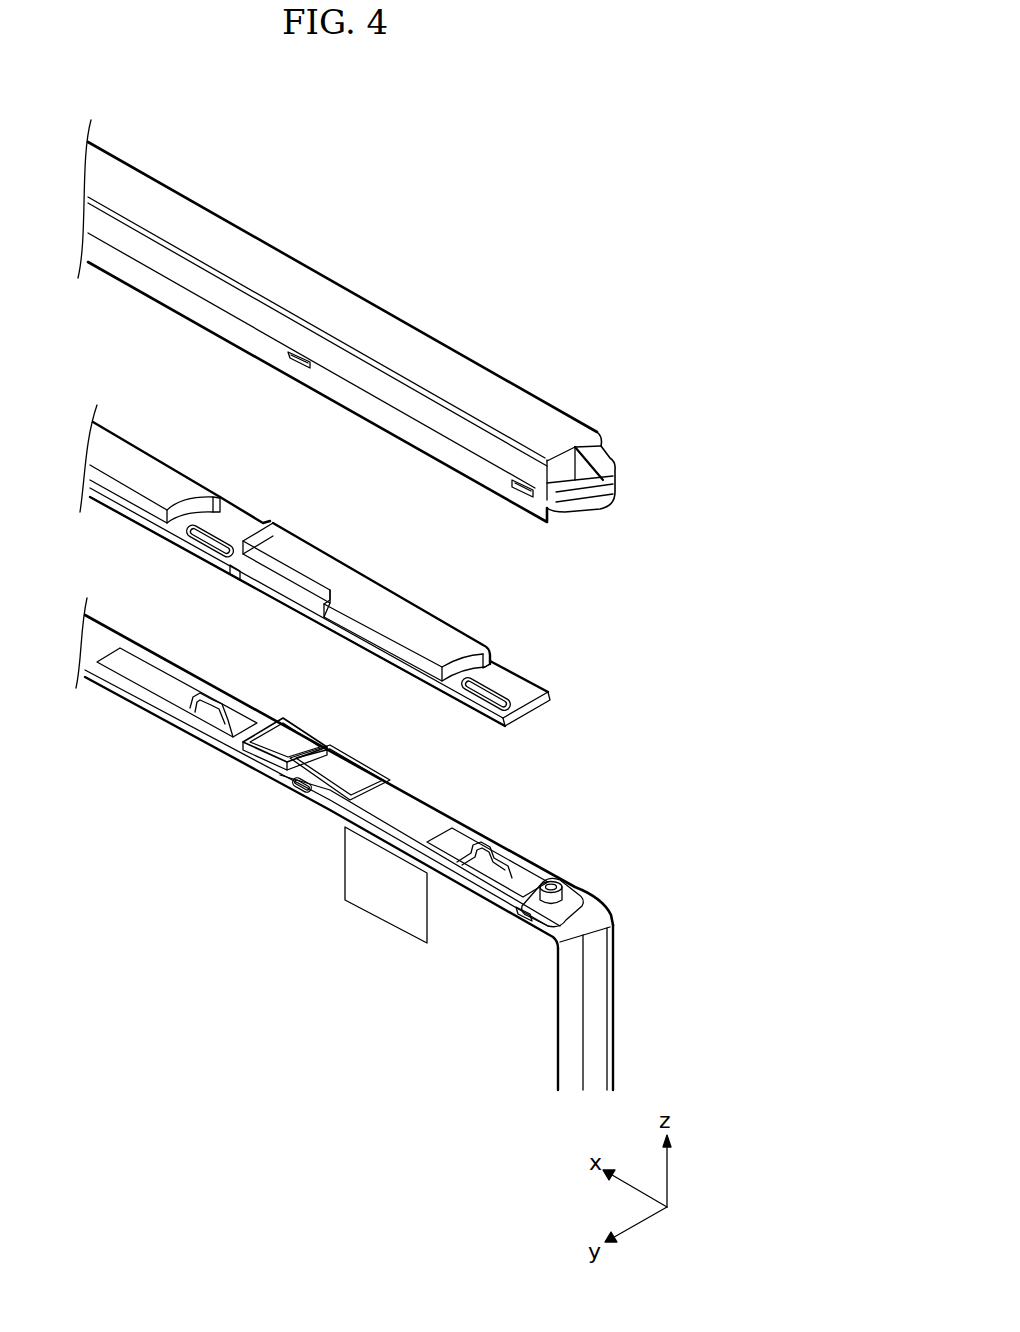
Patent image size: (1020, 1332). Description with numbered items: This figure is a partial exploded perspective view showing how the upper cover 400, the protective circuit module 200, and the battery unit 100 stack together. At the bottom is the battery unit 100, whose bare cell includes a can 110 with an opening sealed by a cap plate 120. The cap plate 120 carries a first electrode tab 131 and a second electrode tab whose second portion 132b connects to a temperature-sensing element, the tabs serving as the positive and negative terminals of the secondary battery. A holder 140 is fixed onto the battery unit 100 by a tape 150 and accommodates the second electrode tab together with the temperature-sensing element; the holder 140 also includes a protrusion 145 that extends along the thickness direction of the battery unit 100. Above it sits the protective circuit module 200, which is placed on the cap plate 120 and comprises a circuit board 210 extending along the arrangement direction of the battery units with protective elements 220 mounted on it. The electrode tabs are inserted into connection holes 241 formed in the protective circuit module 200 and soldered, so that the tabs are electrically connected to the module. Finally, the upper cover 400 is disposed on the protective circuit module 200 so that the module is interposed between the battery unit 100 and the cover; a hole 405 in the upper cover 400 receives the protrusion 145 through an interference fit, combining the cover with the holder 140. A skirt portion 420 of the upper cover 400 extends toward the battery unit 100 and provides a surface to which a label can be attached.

The battery unit 100 is at (634, 978).
The can 110 is at (543, 1003).
The cap plate 120 is at (588, 918).
The first electrode tab 131 is at (152, 684).
The second portion 132b is at (488, 850).
The holder 140 is at (557, 886).
The protrusion 145 is at (297, 792).
The tape 150 is at (388, 912).
The protective circuit module 200 is at (548, 677).
The circuit board 210 is at (530, 708).
The protective element 220 is at (127, 457).
The connection hole 241 is at (217, 547).
The upper cover 400 is at (425, 318).
The hole 405 is at (292, 352).
The skirt portion 420 is at (460, 469).